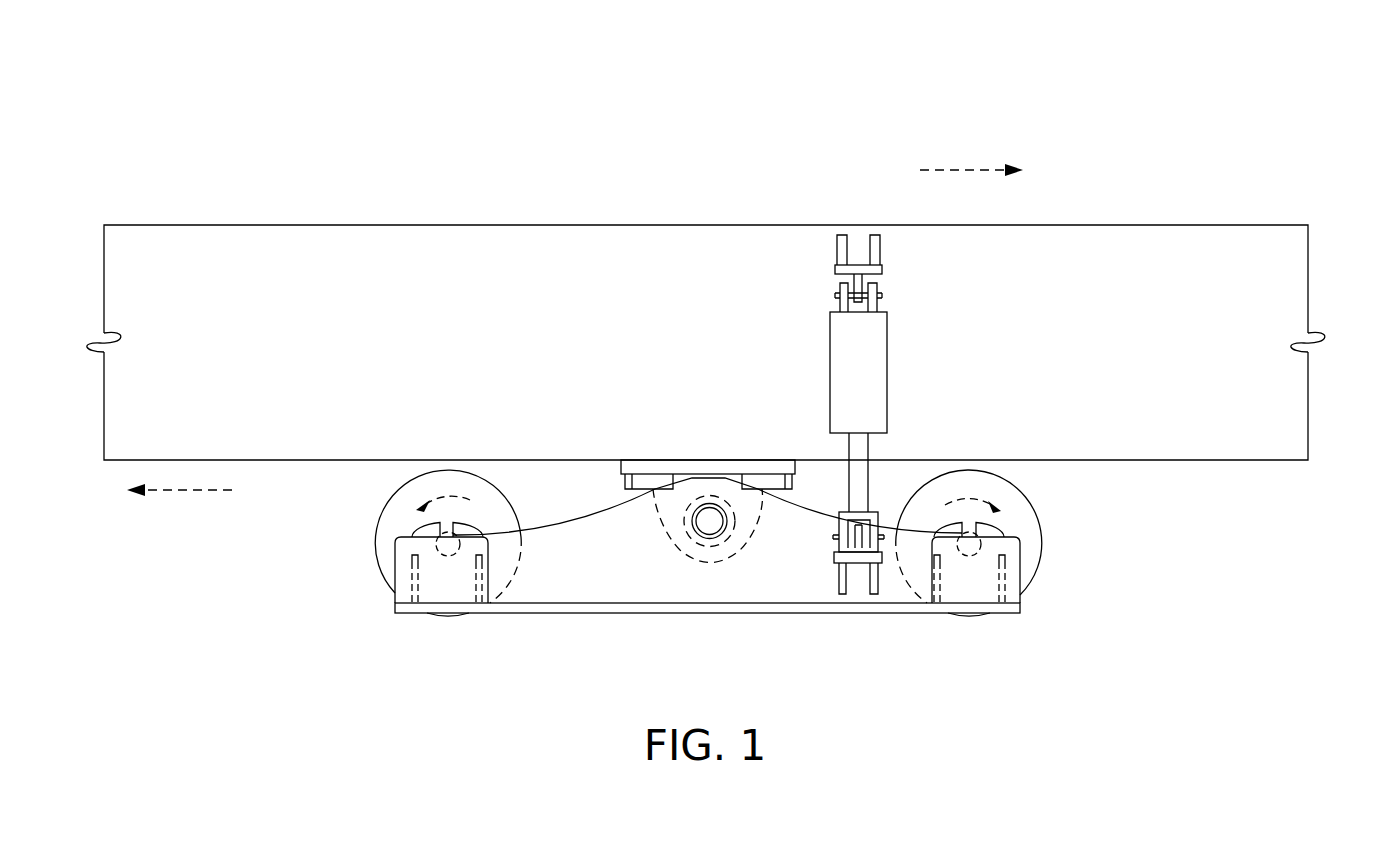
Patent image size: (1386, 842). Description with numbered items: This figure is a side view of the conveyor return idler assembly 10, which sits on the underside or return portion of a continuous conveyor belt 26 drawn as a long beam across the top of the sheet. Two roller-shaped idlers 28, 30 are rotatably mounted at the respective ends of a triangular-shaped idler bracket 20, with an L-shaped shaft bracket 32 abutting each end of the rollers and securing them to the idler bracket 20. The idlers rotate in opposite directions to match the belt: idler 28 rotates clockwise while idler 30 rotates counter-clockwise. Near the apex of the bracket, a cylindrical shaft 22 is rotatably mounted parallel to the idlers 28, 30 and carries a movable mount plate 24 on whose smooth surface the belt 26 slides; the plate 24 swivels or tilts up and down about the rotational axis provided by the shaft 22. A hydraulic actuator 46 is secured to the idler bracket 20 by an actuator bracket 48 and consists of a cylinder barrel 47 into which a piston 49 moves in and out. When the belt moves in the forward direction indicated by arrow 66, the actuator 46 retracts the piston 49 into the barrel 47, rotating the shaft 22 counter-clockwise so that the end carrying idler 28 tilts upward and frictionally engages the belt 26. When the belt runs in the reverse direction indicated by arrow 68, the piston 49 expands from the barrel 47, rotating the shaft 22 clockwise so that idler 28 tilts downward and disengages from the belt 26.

The conveyor return idler assembly 10 is at (717, 147).
The idler bracket 20 is at (569, 582).
The cylindrical shaft 22 is at (710, 522).
The movable mount plate 24 is at (765, 468).
The conveyor belt 26 is at (1275, 265).
The idler 28 is at (1024, 497).
The idler 30 is at (395, 496).
The shaft bracket 32 is at (433, 528).
The hydraulic actuator 46 is at (928, 324).
The cylinder barrel 47 is at (886, 371).
The actuator bracket 48 is at (873, 585).
The piston 49 is at (860, 483).
The arrow 66 is at (970, 170).
The arrow 68 is at (182, 490).